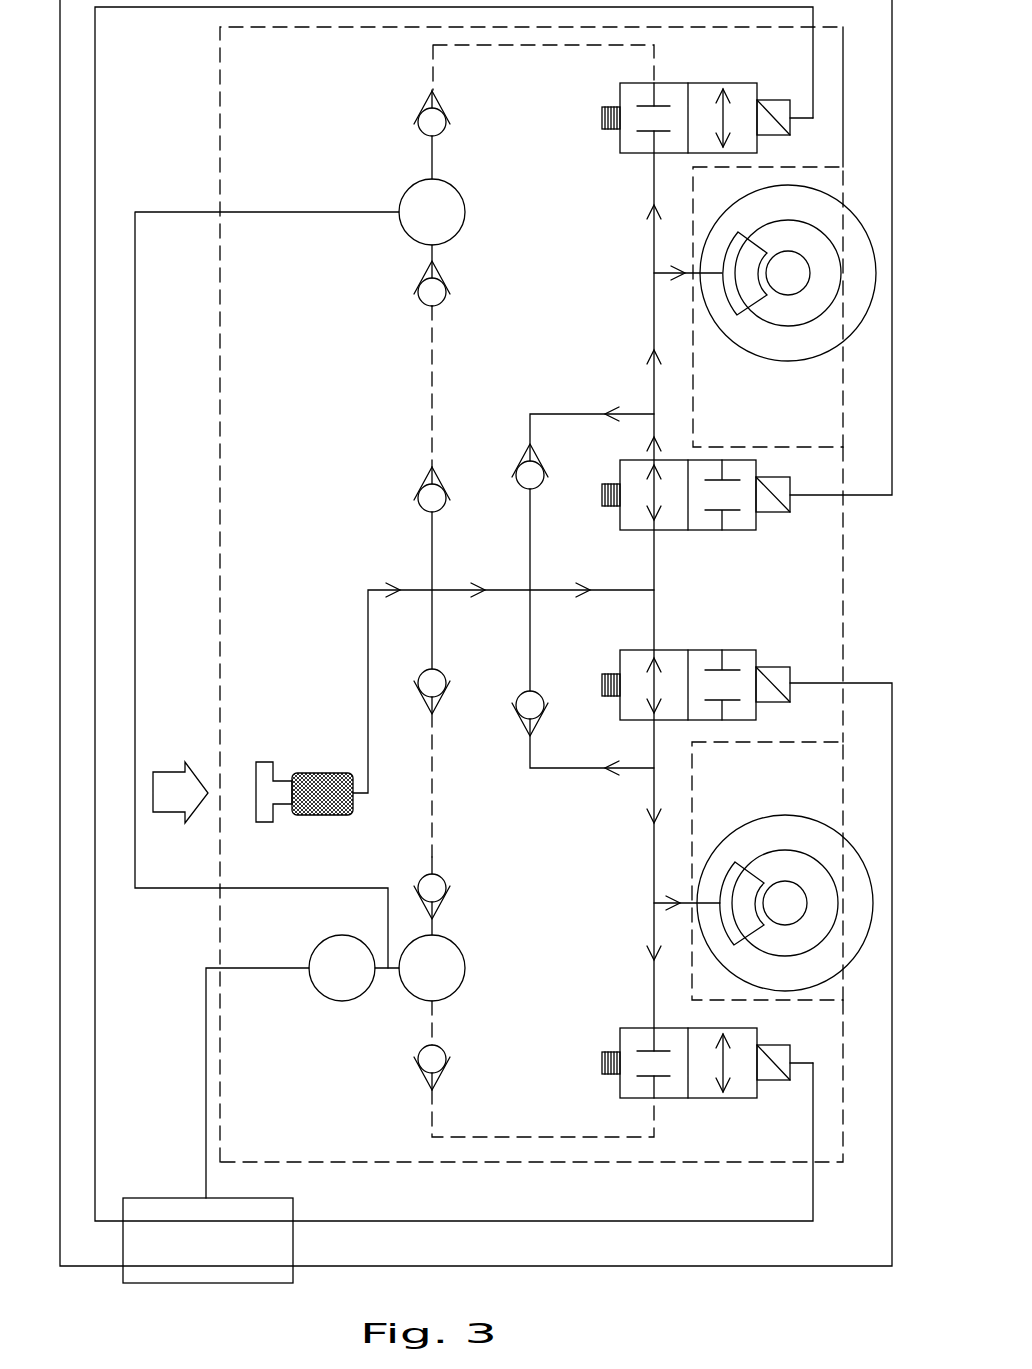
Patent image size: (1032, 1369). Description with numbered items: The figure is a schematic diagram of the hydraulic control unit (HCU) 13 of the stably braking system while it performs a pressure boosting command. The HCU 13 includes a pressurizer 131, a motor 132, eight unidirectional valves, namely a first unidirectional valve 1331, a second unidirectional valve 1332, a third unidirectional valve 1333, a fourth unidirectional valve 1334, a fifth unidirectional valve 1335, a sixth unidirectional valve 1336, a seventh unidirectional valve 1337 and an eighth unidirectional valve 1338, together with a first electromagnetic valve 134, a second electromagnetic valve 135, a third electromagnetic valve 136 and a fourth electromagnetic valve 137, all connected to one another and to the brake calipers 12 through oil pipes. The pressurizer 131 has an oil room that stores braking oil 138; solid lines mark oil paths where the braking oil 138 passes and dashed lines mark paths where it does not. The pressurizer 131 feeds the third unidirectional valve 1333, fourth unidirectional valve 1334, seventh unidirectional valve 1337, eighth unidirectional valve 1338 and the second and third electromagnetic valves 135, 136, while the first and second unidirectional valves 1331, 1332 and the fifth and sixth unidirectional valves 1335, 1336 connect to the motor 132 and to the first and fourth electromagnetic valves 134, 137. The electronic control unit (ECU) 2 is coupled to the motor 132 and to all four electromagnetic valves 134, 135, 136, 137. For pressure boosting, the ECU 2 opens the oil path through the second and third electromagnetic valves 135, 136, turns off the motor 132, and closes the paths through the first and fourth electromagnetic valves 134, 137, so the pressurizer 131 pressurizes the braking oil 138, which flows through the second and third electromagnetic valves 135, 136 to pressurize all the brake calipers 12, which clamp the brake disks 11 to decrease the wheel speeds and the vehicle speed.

The electronic control unit 2 is at (177, 1284).
The brake disk 11 is at (831, 262).
The brake caliper 12 is at (720, 327).
The hydraulic control unit 13 is at (220, 62).
The pressurizer 131 is at (256, 760).
The motor 132 is at (322, 998).
The first unidirectional valve 1331 is at (447, 132).
The second unidirectional valve 1332 is at (447, 300).
The third unidirectional valve 1333 is at (437, 462).
The fourth unidirectional valve 1334 is at (436, 718).
The fifth unidirectional valve 1335 is at (447, 884).
The sixth unidirectional valve 1336 is at (447, 1050).
The seventh unidirectional valve 1337 is at (540, 488).
The eighth unidirectional valve 1338 is at (540, 692).
The first electromagnetic valve 134 is at (622, 153).
The second electromagnetic valve 135 is at (690, 531).
The third electromagnetic valve 136 is at (690, 650).
The fourth electromagnetic valve 137 is at (622, 1028).
The braking oil 138 is at (332, 793).